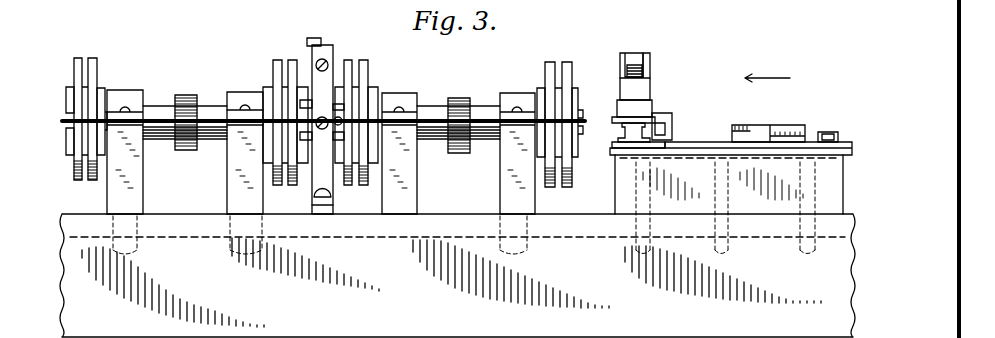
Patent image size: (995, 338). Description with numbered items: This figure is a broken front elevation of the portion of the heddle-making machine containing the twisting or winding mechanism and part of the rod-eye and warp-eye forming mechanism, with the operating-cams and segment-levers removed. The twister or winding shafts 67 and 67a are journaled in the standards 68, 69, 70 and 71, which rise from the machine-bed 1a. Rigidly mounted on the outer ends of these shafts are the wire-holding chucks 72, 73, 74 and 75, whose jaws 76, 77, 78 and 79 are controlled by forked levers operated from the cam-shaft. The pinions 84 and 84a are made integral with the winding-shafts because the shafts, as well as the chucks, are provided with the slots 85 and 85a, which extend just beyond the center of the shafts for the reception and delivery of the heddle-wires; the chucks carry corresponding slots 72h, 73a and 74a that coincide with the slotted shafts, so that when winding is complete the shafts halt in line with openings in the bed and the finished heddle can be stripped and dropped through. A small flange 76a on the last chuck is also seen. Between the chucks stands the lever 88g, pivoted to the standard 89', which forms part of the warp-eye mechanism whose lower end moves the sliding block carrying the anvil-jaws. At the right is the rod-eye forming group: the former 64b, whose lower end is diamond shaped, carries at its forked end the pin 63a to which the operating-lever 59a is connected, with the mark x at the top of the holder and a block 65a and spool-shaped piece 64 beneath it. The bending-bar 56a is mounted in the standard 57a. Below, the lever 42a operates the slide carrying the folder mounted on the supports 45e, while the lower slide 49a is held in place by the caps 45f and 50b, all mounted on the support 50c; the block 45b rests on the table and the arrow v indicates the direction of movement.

The base 1a is at (457, 275).
The jaw 76 is at (66, 87).
The wire-holding chuck 72 is at (94, 70).
The slot 72h is at (105, 114).
The twister or winding shaft 67 is at (160, 106).
The pinion 84 is at (187, 96).
The slot 85 is at (208, 106).
The standard 68 is at (125, 152).
The standard 69 is at (245, 153).
The slot 73a is at (262, 118).
The wire-holding chuck 73 is at (276, 62).
The jaw 77 is at (303, 98).
The lever 88g is at (316, 38).
The standard 89' is at (335, 196).
The jaw 78 is at (346, 108).
The wire-holding chuck 74 is at (366, 68).
The slot 74a is at (373, 112).
The standard 70 is at (399, 153).
The twister or winding shaft 67a is at (435, 106).
The slot 85a is at (486, 106).
The pinion 84a is at (459, 98).
The standard 71 is at (517, 153).
The pulley hub 76a is at (541, 110).
The wire-holding chuck 75 is at (559, 62).
The jaw 79 is at (581, 110).
The pin 63a is at (620, 65).
The operating-lever 59a is at (632, 53).
The reference point x is at (644, 53).
The former 64b is at (635, 87).
The support block 65a is at (634, 106).
The standard 57a is at (675, 128).
The bending-bar 56a is at (672, 118).
The pedestal 64 is at (634, 132).
The lower slide 49a is at (610, 152).
The cap 45f is at (705, 142).
The support 45e is at (785, 140).
The cap 50b is at (687, 150).
The support 50c is at (723, 184).
The slide block 45b is at (790, 128).
The lever 42a is at (834, 132).
The direction of motion v is at (767, 72).